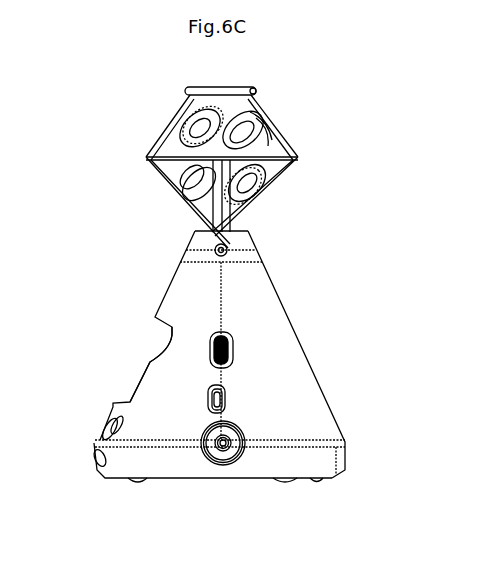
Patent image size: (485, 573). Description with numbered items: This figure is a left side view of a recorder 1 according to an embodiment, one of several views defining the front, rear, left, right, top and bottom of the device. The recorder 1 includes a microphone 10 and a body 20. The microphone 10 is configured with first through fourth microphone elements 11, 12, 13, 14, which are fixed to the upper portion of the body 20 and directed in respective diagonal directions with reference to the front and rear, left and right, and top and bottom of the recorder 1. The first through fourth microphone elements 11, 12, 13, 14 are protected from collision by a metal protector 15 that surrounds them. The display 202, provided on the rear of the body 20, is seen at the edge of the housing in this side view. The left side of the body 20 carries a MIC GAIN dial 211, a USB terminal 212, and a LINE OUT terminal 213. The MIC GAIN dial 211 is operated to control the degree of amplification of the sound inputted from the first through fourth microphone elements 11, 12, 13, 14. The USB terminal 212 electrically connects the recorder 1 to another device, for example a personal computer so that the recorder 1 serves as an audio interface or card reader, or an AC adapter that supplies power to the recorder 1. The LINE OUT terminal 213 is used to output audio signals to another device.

The recorder 1 is at (230, 58).
The microphone 10 is at (284, 105).
The first microphone element 11 is at (282, 122).
The second microphone element 12 is at (272, 177).
The third microphone element 13 is at (175, 185).
The fourth microphone element 14 is at (182, 124).
The metal protector 15 is at (189, 87).
The body 20 is at (306, 319).
The display 202 is at (150, 362).
The MIC GAIN dial 211 is at (227, 352).
The USB terminal 212 is at (222, 402).
The LINE OUT terminal 213 is at (226, 446).